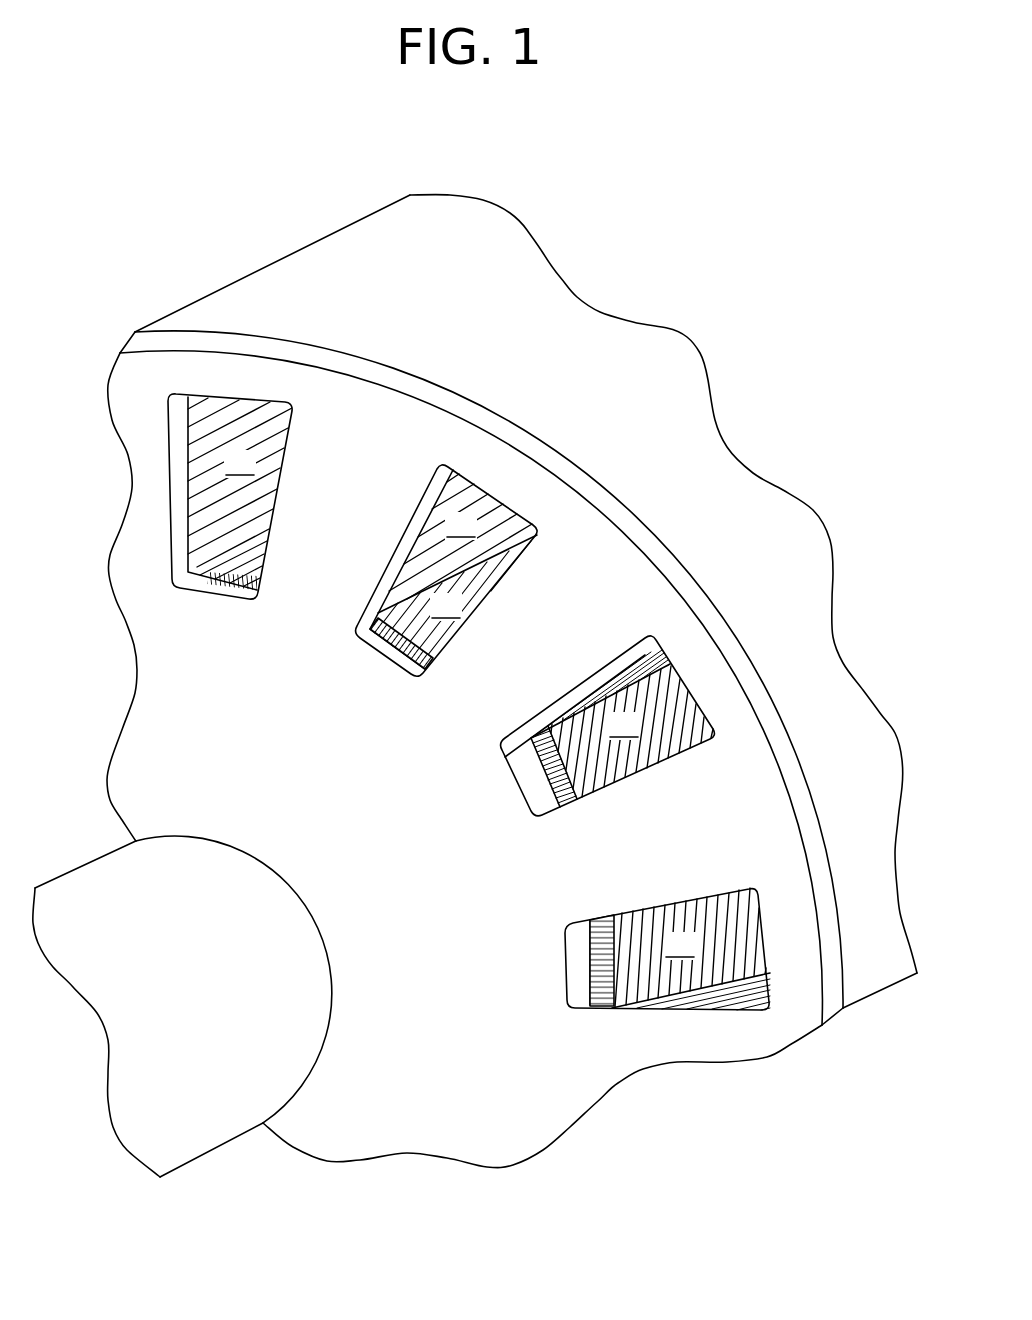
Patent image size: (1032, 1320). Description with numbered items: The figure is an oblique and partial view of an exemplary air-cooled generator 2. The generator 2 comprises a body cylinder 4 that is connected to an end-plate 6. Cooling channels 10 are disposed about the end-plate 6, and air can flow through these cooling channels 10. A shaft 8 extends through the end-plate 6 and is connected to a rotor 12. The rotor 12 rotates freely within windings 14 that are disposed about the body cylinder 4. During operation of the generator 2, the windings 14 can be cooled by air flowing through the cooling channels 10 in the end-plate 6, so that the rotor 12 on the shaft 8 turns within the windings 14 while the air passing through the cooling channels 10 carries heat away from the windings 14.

The generator 2 is at (258, 240).
The body cylinder 4 is at (598, 389).
The end-plate 6 is at (521, 643).
The shaft 8 is at (218, 963).
The cooling channels 10 is at (182, 597).
The rotor 12 is at (254, 555).
The windings 14 is at (226, 475).